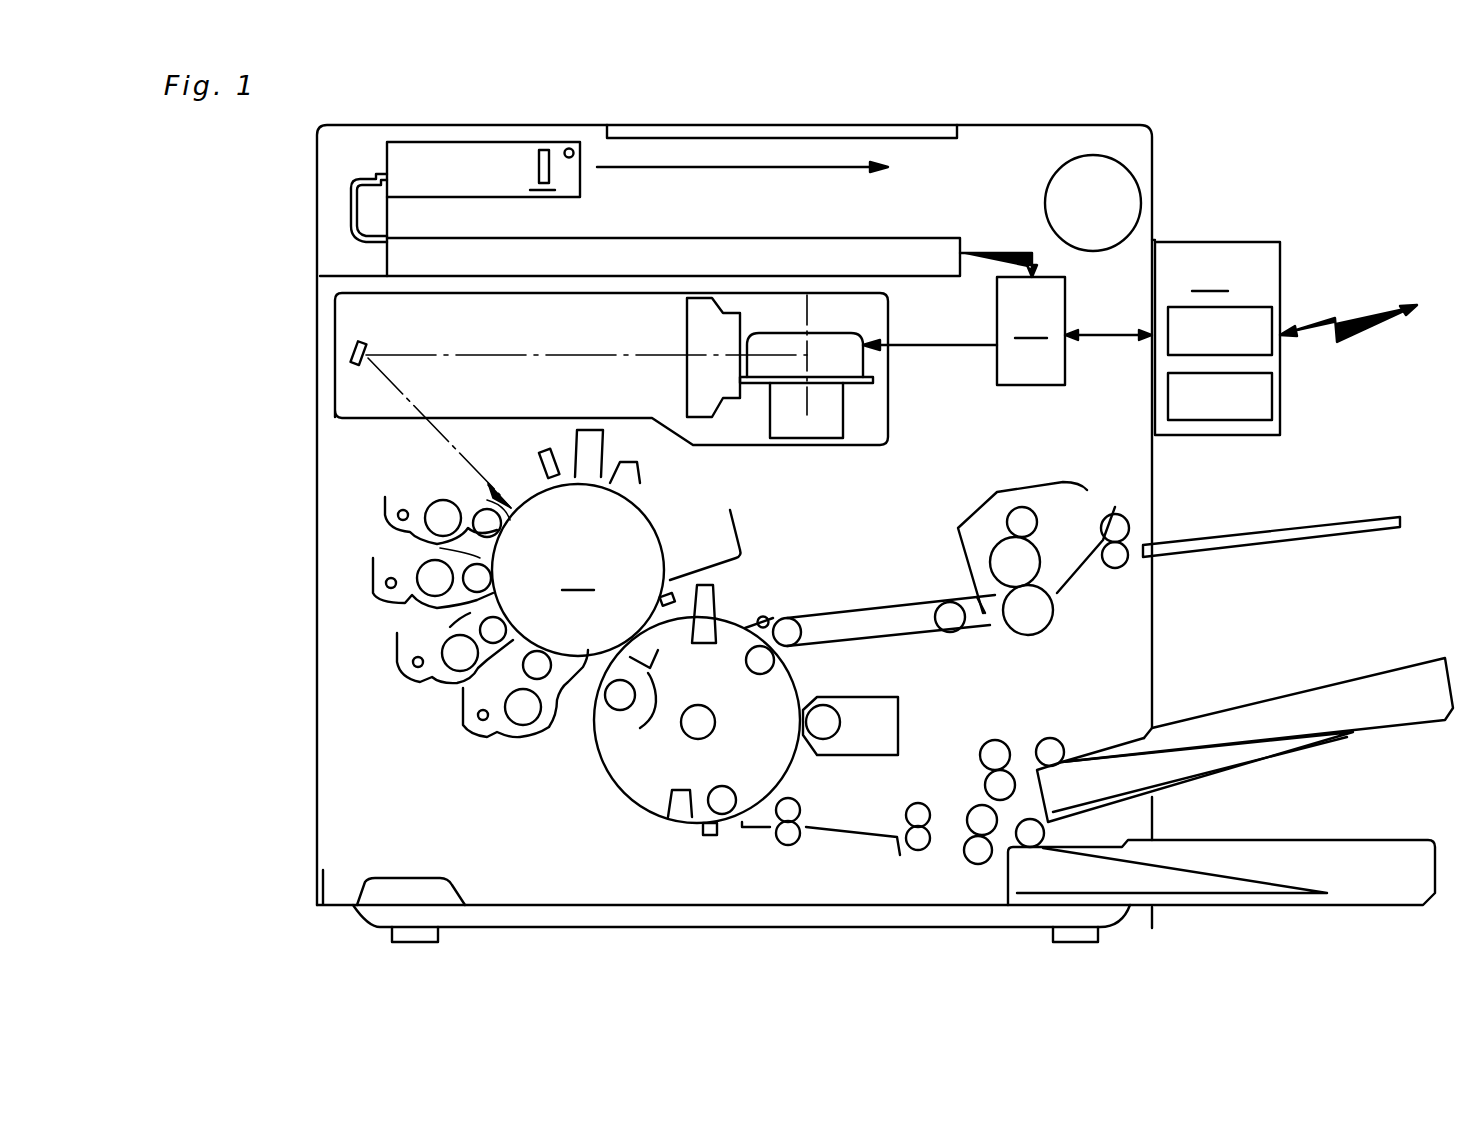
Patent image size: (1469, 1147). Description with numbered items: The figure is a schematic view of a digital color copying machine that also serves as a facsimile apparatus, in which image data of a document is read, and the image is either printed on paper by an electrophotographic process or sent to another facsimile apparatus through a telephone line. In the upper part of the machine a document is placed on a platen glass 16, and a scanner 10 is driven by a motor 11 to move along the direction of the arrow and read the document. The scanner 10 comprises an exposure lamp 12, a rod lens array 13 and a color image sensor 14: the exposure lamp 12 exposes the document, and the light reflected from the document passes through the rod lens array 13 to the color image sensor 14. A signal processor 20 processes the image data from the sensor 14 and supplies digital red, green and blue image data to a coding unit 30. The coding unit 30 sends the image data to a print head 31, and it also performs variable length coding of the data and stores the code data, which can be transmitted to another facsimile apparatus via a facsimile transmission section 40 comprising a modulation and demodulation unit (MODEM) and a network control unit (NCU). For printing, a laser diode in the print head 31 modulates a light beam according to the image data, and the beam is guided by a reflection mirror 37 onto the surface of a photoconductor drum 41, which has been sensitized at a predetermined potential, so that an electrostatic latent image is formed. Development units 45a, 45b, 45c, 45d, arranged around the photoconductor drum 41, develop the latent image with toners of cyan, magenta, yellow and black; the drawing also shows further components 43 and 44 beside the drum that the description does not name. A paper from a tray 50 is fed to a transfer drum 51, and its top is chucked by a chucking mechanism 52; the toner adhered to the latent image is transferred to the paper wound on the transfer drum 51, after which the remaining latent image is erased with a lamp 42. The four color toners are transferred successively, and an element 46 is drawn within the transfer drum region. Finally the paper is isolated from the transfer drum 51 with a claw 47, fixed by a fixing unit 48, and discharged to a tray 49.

The scanner 10 is at (460, 140).
The motor 11 is at (1141, 198).
The exposure lamp 12 is at (568, 148).
The rod lens array 13 is at (538, 165).
The color image sensor 14 is at (540, 197).
The platen glass 16 is at (858, 125).
The signal processor 20 is at (405, 251).
The coding unit 30 is at (1056, 319).
The print head 31 is at (867, 360).
The reflection mirror 37 is at (368, 345).
The facsimile transmission section 40 is at (1284, 337).
The photoconductor drum 41 is at (616, 570).
The lamp 42 is at (640, 470).
The cleaner 43 is at (600, 430).
The eraser lamp 44 is at (545, 450).
The development unit 45a is at (385, 508).
The development unit 45b is at (377, 603).
The development unit 45c is at (397, 665).
The development unit 45d is at (467, 737).
The transfer drum 46 is at (640, 728).
The claw 47 is at (765, 617).
The fixing unit 48 is at (997, 492).
The tray 49 is at (1340, 517).
The tray 50 is at (1355, 740).
The transfer drum 51 is at (642, 812).
The chucking mechanism 52 is at (709, 838).